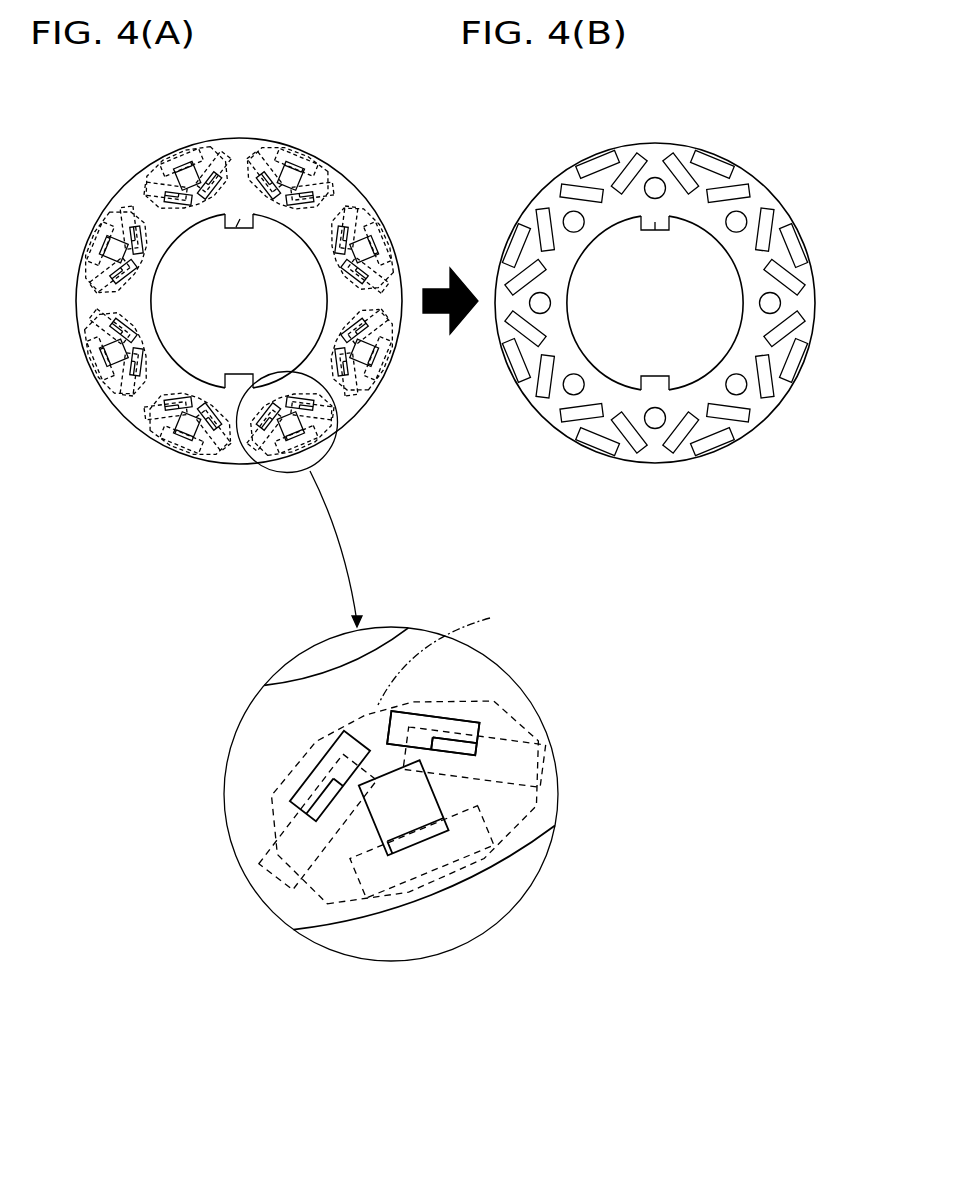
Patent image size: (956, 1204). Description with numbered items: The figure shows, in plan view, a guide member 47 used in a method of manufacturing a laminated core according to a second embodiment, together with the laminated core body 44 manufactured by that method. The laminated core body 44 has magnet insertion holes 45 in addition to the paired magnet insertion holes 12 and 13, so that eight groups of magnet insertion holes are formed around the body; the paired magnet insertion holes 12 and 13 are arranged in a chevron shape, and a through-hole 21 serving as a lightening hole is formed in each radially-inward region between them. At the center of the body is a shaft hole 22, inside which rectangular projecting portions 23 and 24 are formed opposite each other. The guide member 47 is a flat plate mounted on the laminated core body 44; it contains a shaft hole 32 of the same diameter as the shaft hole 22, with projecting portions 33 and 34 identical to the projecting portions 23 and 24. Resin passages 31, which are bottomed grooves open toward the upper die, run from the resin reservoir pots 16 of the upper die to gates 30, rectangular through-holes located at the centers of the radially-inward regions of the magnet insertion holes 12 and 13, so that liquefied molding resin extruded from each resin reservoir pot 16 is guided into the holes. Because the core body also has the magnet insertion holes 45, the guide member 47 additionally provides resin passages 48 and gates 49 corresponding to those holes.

In FIG. 4A, the magnet insertion hole 12 is at (317, 822).
In FIG. 4B, the magnet insertion hole 12 is at (797, 280).
In FIG. 4A, the magnet insertion hole 13 is at (474, 757).
In FIG. 4B, the magnet insertion hole 13 is at (778, 217).
In FIG. 4A, the resin reservoir pot 16 is at (452, 651).
In FIG. 4B, the through-hole 21 is at (564, 216).
In FIG. 4B, the shaft hole 22 is at (580, 345).
In FIG. 4B, the projecting portion 23 is at (667, 363).
In FIG. 4B, the projecting portion 24 is at (650, 228).
In FIG. 4A, the gate 30 is at (382, 755).
In FIG. 4A, the resin passage 31 is at (333, 372).
In FIG. 4A, the shaft hole 32 is at (160, 337).
In FIG. 4A, the projecting portion 33 is at (230, 373).
In FIG. 4A, the projecting portion 34 is at (183, 232).
In FIG. 4B, the laminated core body 44 is at (669, 464).
In FIG. 4A, the magnet insertion hole 45 is at (407, 795).
In FIG. 4B, the magnet insertion hole 45 is at (812, 237).
In FIG. 4A, the guide member 47 is at (321, 151).
In FIG. 4A, the resin passage 48 is at (361, 362).
In FIG. 4A, the gate 49 is at (417, 835).